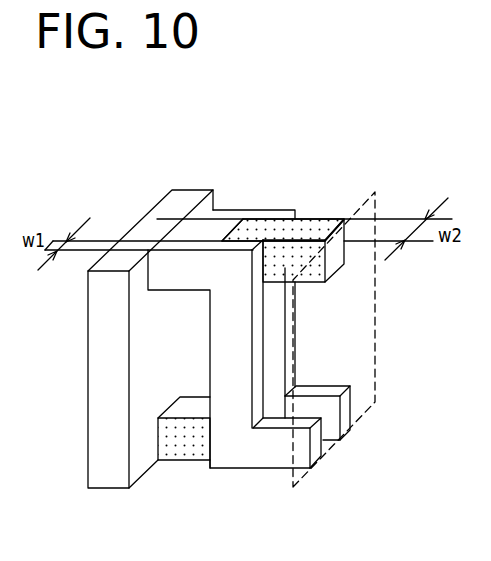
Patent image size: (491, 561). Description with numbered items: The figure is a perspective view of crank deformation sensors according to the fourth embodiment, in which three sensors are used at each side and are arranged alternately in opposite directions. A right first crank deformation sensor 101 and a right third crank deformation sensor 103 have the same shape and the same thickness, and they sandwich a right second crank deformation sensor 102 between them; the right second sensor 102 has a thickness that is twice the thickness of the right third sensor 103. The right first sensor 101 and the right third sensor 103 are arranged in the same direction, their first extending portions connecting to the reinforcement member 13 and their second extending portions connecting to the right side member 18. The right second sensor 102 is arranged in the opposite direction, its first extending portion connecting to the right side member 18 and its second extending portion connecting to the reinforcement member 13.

The reinforcement member 13 is at (92, 380).
The right first crank deformation sensor 101 is at (260, 210).
The right second crank deformation sensor 102 is at (346, 265).
The right third crank deformation sensor 103 is at (272, 470).
The right side member 18 is at (377, 210).